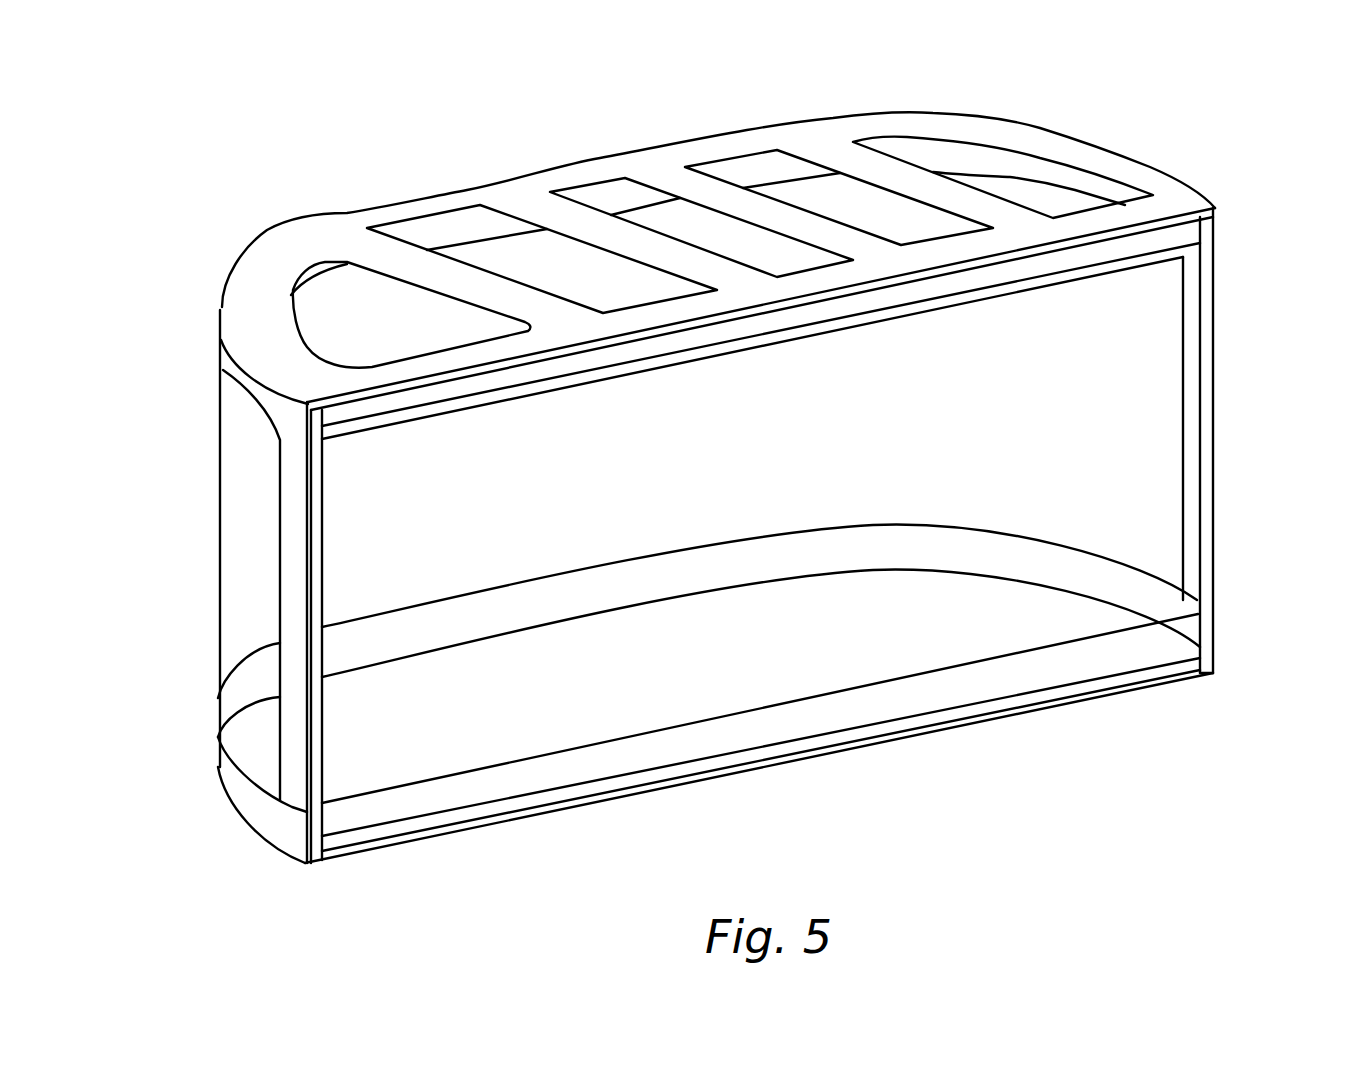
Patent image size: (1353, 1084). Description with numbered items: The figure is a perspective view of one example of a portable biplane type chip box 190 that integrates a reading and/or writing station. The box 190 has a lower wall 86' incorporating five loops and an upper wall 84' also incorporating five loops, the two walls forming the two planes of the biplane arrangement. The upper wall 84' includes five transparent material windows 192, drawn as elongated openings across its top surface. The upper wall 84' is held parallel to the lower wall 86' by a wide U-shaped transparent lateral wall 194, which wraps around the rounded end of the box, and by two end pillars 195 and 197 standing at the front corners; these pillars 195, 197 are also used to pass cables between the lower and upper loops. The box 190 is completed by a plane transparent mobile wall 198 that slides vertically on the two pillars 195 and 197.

The portable biplane type chip box 190 is at (1222, 144).
The upper wall 84' is at (718, 246).
The transparent material windows 192 is at (830, 198).
The wide U-shaped transparent lateral wall 194 is at (208, 516).
The end pillar 195 is at (292, 790).
The end pillar 197 is at (1213, 582).
The plane transparent mobile wall 198 is at (1164, 428).
The lower wall 86' is at (825, 738).